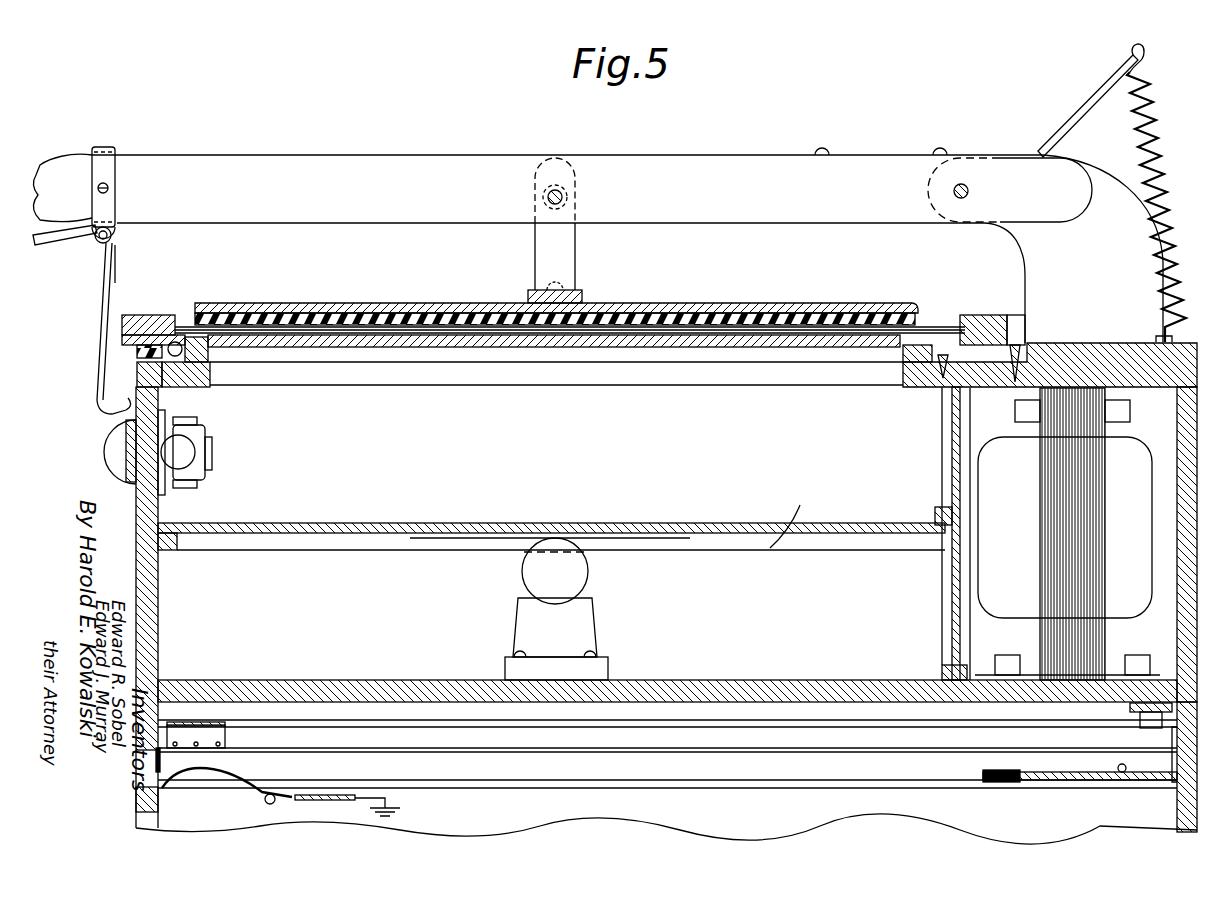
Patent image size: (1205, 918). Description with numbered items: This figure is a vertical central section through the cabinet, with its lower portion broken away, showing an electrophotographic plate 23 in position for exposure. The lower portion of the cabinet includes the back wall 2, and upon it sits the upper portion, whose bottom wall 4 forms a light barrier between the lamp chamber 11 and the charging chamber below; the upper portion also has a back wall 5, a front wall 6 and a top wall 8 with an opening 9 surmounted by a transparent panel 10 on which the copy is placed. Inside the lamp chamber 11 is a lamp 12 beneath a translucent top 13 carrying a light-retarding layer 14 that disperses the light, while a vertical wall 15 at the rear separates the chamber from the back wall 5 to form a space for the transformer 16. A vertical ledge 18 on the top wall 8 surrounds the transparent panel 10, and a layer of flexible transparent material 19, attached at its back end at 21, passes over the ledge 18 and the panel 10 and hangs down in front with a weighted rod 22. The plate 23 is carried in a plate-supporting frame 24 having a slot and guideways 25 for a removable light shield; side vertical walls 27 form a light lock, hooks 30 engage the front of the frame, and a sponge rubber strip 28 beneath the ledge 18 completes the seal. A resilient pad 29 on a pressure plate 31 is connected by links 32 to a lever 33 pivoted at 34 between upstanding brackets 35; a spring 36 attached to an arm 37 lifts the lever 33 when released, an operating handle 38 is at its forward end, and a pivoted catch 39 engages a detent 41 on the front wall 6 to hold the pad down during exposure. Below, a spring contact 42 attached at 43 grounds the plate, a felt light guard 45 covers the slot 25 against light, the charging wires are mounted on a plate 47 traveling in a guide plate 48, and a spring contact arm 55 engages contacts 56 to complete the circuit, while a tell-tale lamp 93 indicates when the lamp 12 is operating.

The back wall 2 is at (1172, 806).
The bottom wall 4 is at (700, 680).
The back wall 5 is at (1177, 426).
The front wall 6 is at (135, 504).
The top wall 8 is at (1156, 386).
The opening 9 is at (845, 388).
The transparent panel 10 is at (475, 347).
The lamp chamber 11 is at (792, 517).
The lamp 12 is at (588, 575).
The translucent top 13 is at (272, 524).
The light-retarding layer 14 is at (472, 540).
The vertical wall 15 is at (950, 470).
The transformer 16 is at (1085, 492).
The vertical ledge 18 is at (208, 352).
The layer of flexible transparent material 19 is at (400, 345).
The point of attachment 21 is at (950, 364).
The weighted rod 22 is at (190, 387).
The electrophotographic plate 23 is at (178, 326).
The plate-supporting frame 24 is at (140, 316).
The slot and guideways 25 is at (136, 350).
The side vertical walls 27 is at (1012, 330).
The strip of sponge rubber 28 is at (136, 372).
The resilient pad 29 is at (270, 310).
The hooks 30 is at (120, 336).
The pressure plate 31 is at (340, 305).
The links 32 is at (578, 256).
The lever 33 is at (660, 160).
The pivot 34 is at (968, 189).
The upstanding brackets 35 is at (1025, 265).
The spring 36 is at (1152, 126).
The arm 37 is at (1095, 98).
The operating handle 38 is at (44, 166).
The pivoted catch 39 is at (100, 282).
The detent 41 is at (100, 404).
The spring contact 42 is at (232, 786).
The attachment point 43 is at (280, 804).
The felt light guard 45 is at (160, 760).
The plate 47 is at (200, 724).
The guide plate 48 is at (792, 726).
The spring contact arm 55 is at (1150, 730).
The contacts 56 is at (1128, 708).
The tell-tale lamp 93 is at (110, 448).